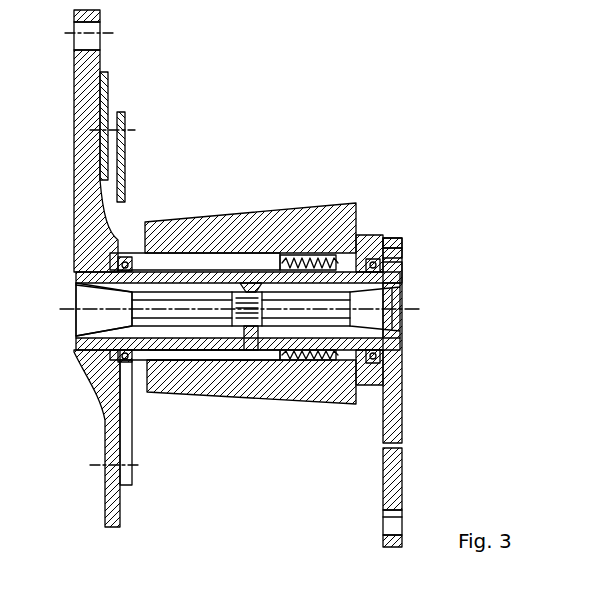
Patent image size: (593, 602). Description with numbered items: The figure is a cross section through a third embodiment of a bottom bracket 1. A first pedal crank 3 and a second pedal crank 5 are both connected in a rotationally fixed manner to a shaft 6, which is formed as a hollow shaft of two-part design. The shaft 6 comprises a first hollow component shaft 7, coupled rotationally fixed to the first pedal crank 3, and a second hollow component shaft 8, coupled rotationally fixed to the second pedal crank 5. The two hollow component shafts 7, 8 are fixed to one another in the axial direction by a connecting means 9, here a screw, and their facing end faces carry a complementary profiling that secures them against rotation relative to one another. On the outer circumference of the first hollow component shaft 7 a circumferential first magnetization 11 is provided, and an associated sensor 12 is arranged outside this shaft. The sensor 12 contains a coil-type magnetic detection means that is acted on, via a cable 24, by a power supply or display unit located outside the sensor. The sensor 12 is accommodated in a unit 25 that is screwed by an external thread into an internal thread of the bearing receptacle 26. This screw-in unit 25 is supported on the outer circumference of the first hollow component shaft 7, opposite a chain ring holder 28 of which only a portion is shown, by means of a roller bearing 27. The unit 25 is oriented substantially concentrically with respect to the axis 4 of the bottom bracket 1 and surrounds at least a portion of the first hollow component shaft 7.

The bottom bracket 1 is at (260, 154).
The first pedal crank 3 is at (404, 466).
The axis 4 is at (66, 300).
The second pedal crank 5 is at (82, 203).
The shaft 6 is at (206, 270).
The first hollow component shaft 7 is at (400, 336).
The second hollow component shaft 8 is at (200, 352).
The connecting means 9 is at (245, 352).
The first magnetization 11 is at (310, 362).
The sensor 12 is at (380, 212).
The cable 24 is at (364, 233).
The unit which can be screwed in 25 is at (386, 240).
The bearing receptacle 26 is at (294, 215).
The roller bearing 27 is at (403, 271).
The chain ring holder 28 is at (403, 250).